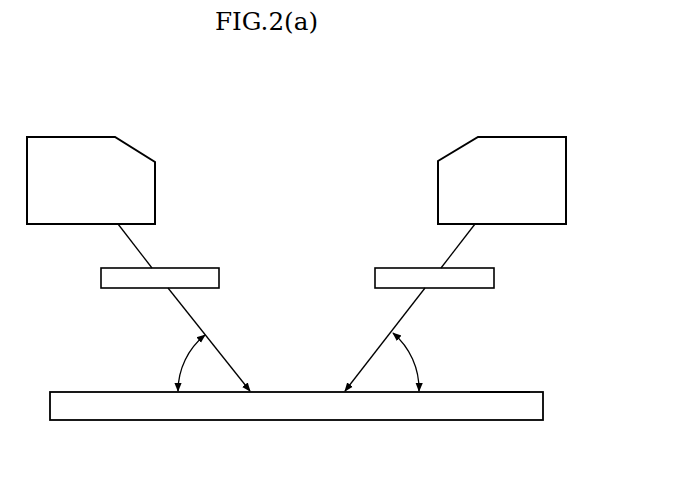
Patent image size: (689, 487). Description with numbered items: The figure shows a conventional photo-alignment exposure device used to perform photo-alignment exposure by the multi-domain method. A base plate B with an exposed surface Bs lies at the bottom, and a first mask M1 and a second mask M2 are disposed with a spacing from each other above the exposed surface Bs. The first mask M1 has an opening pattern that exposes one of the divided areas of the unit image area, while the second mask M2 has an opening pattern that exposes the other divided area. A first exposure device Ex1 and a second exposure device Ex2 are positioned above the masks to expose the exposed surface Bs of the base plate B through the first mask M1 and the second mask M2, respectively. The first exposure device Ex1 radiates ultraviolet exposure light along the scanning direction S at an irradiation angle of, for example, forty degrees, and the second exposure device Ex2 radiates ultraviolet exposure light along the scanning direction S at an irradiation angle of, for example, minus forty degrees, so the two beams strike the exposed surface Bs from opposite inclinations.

The first exposure device Ex1 is at (73, 137).
The second exposure device Ex2 is at (524, 137).
The first mask M1 is at (219, 277).
The second mask M2 is at (494, 277).
The base plate B is at (543, 404).
The exposed surface Bs is at (492, 392).
The scanning direction S is at (482, 443).